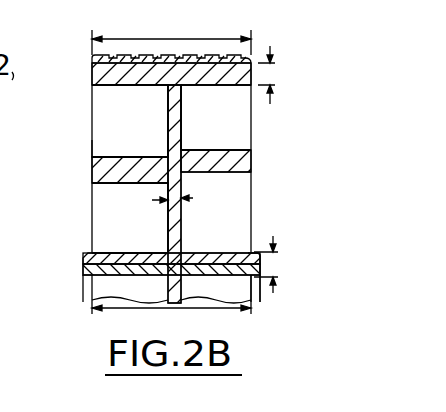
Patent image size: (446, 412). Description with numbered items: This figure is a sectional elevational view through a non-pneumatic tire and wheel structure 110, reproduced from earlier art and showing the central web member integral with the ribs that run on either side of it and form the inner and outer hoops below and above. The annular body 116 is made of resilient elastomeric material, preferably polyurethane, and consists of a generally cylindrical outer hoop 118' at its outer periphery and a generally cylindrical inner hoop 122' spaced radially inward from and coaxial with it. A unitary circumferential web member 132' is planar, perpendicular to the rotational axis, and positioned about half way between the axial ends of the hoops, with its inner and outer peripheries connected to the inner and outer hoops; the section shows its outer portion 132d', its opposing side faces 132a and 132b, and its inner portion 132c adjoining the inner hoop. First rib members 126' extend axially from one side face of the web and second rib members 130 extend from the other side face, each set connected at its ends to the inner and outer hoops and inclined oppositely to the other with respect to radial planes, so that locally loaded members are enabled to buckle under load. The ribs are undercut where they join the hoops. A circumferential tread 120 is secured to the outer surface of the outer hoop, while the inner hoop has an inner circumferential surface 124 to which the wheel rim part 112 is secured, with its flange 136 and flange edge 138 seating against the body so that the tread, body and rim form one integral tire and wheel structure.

The outer member 110 is at (256, 32).
The wheel rim part 112 is at (265, 322).
The intermediate wall 116 is at (84, 167).
The outer cylindrical hoop 118' is at (145, 83).
The circumferential tread 120 is at (92, 63).
The inner cylindrical hoop 122' is at (100, 218).
The inner circumferential surface 124 is at (103, 274).
The first rib members 126' is at (101, 214).
The second rib members 130 is at (241, 146).
The circumferential web member 132' is at (134, 121).
The cavity wall 132a is at (165, 145).
The cavity wall 132b is at (181, 131).
The central web 132c is at (167, 251).
The cavity wall 132d' is at (130, 121).
The flange 136 is at (84, 253).
The flange edge 138 is at (257, 252).